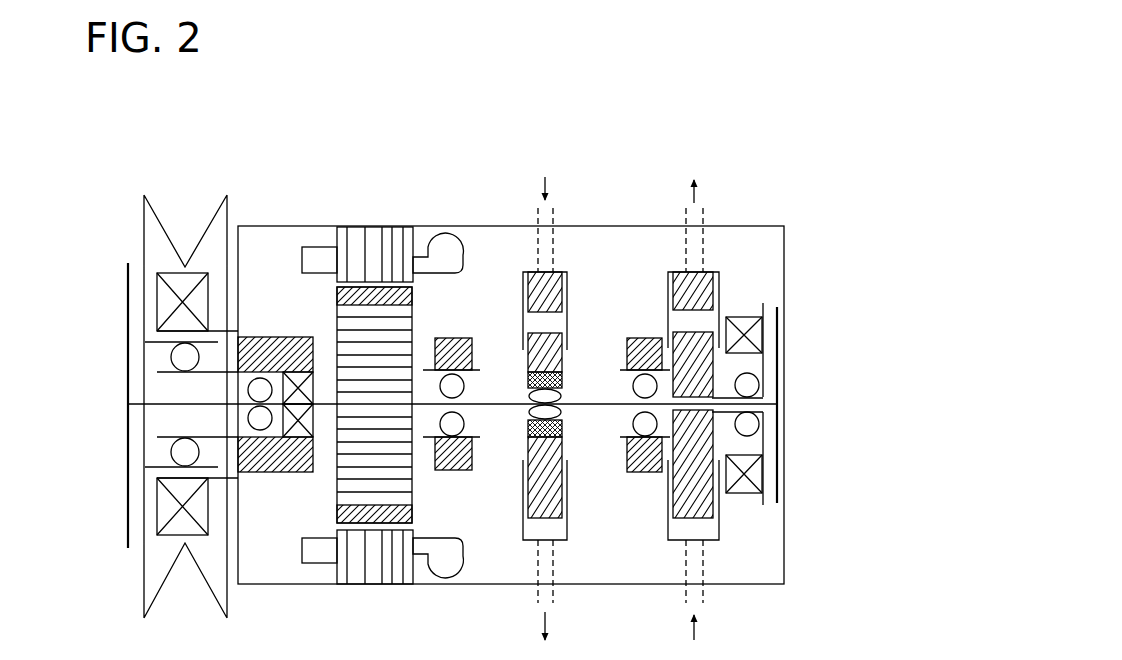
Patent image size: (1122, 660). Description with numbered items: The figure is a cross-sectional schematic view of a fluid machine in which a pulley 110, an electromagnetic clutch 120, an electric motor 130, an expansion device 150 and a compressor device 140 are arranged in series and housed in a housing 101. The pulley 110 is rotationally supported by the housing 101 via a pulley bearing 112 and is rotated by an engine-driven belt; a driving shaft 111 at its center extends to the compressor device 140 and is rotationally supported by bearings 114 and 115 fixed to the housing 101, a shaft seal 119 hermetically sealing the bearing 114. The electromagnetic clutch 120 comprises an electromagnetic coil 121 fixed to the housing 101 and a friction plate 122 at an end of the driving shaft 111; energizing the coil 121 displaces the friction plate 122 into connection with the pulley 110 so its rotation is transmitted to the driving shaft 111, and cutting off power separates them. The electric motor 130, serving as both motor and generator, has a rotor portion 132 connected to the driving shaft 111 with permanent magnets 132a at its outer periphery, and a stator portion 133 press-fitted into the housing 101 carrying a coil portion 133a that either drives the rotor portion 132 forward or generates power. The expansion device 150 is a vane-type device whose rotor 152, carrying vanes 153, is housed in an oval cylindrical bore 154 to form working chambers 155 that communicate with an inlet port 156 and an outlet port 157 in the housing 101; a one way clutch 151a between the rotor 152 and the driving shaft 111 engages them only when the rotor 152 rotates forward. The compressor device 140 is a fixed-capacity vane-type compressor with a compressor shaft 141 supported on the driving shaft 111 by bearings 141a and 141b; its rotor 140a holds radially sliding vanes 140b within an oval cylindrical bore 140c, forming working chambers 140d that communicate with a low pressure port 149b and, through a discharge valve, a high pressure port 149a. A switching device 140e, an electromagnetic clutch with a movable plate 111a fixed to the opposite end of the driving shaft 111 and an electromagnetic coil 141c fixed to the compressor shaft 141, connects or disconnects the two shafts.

The housing 101 is at (466, 226).
The pulley 110 is at (158, 220).
The driving shaft 111 is at (150, 400).
The movable plate 111a is at (779, 430).
The pulley bearing 112 is at (178, 357).
The bearing 114 is at (260, 420).
The bearing 115 is at (456, 424).
The shaft seal 119 is at (297, 378).
The electromagnetic clutch 120 is at (130, 329).
The electromagnetic coil 121 is at (163, 297).
The friction plate 122 is at (127, 290).
The electric motor 130 is at (350, 347).
The rotor portion 132 is at (326, 332).
The permanent magnets 132a is at (357, 295).
The stator portion 133 is at (365, 246).
The coil portion 133a is at (427, 371).
The compressor device 140 is at (748, 340).
The rotor 140a is at (695, 340).
The vanes 140b is at (700, 300).
The oval cylindrical bore 140c is at (716, 517).
The working chambers 140d is at (700, 530).
The switching device 140e is at (855, 420).
The compressor shaft 141 is at (723, 393).
The bearing 141a is at (640, 388).
The bearing 141b is at (750, 385).
The electromagnetic coil 141c is at (755, 475).
The high pressure port 149a is at (703, 218).
The low pressure port 149b is at (703, 592).
The expansion device 150 is at (573, 328).
The one way clutch 151a is at (556, 412).
The rotor 152 is at (555, 358).
The vanes 153 is at (548, 296).
The oval cylindrical bore 154 is at (565, 492).
The working chambers 155 is at (552, 530).
The inlet port 156 is at (553, 218).
The outlet port 157 is at (553, 592).